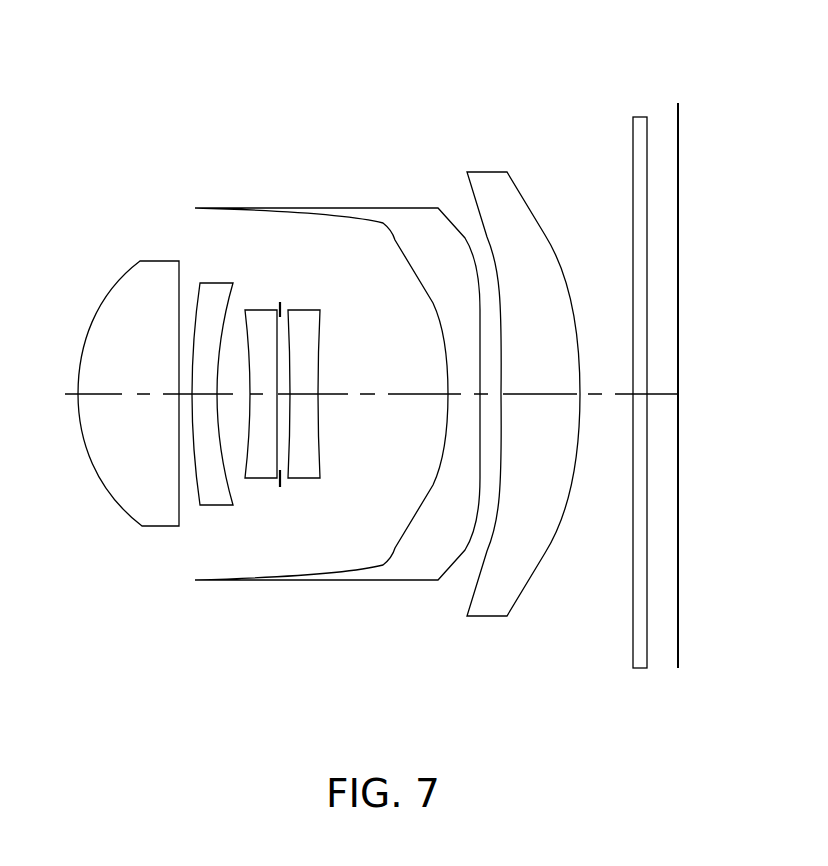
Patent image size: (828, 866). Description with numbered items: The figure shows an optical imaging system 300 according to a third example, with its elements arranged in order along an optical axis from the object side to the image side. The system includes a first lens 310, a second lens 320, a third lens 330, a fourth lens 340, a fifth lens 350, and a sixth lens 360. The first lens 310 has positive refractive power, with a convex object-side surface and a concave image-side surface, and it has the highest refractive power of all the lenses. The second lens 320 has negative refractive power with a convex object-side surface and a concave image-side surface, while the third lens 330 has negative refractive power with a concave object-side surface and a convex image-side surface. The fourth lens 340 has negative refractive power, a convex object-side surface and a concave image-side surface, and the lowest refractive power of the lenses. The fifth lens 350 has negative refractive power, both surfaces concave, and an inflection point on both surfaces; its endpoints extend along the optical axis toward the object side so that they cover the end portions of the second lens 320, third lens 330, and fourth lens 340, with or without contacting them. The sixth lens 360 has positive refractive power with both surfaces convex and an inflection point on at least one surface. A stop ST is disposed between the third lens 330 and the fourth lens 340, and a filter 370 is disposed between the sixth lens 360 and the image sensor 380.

The optical imaging system 300 is at (339, 128).
The first lens 310 is at (142, 528).
The second lens 320 is at (212, 499).
The third lens 330 is at (258, 478).
The fourth lens 340 is at (303, 478).
The fifth lens 350 is at (410, 578).
The sixth lens 360 is at (490, 614).
The filter 370 is at (633, 665).
The image sensor 380 is at (675, 669).
The stop ST is at (280, 302).